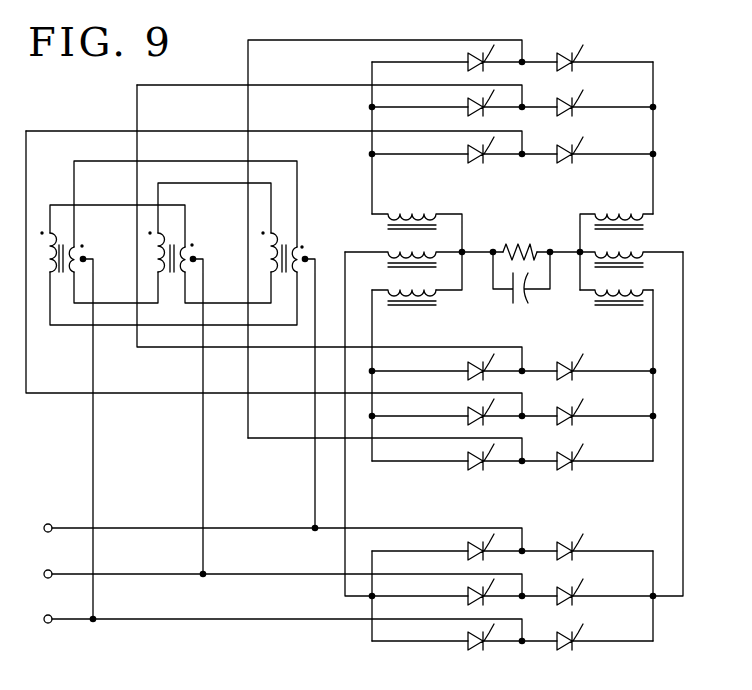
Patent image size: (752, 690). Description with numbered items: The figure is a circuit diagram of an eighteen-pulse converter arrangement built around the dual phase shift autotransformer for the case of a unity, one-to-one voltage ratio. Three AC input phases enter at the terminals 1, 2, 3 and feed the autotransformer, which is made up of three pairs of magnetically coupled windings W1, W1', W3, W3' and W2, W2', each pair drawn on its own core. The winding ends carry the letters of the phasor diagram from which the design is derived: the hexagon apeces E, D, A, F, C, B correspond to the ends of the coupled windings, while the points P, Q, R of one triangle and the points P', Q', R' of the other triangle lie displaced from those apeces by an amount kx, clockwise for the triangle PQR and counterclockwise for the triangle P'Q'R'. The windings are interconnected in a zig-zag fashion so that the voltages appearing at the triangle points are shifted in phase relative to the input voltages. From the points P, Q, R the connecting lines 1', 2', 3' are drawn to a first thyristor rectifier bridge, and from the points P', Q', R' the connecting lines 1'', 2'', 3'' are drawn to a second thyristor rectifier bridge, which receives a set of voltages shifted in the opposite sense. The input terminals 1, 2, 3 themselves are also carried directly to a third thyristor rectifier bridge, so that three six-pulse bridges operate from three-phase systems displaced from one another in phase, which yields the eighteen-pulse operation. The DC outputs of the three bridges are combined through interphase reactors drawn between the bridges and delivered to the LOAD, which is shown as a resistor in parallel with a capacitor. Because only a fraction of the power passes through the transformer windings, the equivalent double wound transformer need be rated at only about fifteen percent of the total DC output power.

The phase input terminal 1 is at (273, 426).
The phase input terminal 2 is at (273, 450).
The phase input terminal 3 is at (273, 472).
The phase-shifted output line 1' is at (274, 129).
The phase-shifted output line 2' is at (329, 84).
The phase-shifted output line 3' is at (385, 226).
The phase-shifted output line 1'' is at (274, 273).
The phase-shifted output line 2'' is at (385, 437).
The phase-shifted output line 3'' is at (329, 228).
The autotransformer winding W1 is at (41, 252).
The autotransformer winding W1' is at (95, 431).
The autotransformer winding W2 is at (266, 252).
The autotransformer winding W2' is at (316, 385).
The autotransformer winding W3 is at (154, 252).
The autotransformer winding W3' is at (204, 408).
The winding connection point P is at (38, 223).
The winding connection point Q' is at (40, 284).
The hexagon apex E is at (81, 237).
The hexagon apex D is at (80, 283).
The winding connection point Q is at (147, 223).
The winding connection point R' is at (149, 283).
The hexagon apex A is at (194, 235).
The hexagon apex F is at (190, 282).
The winding connection point R is at (259, 223).
The winding connection point P' is at (261, 284).
The hexagon apex C is at (306, 235).
The hexagon apex B is at (303, 286).
The load LOAD is at (522, 257).